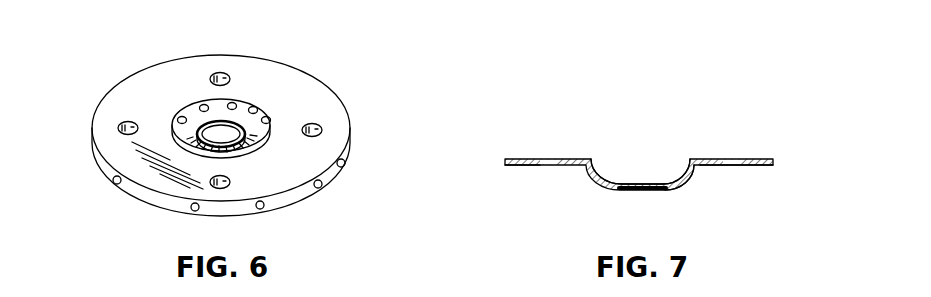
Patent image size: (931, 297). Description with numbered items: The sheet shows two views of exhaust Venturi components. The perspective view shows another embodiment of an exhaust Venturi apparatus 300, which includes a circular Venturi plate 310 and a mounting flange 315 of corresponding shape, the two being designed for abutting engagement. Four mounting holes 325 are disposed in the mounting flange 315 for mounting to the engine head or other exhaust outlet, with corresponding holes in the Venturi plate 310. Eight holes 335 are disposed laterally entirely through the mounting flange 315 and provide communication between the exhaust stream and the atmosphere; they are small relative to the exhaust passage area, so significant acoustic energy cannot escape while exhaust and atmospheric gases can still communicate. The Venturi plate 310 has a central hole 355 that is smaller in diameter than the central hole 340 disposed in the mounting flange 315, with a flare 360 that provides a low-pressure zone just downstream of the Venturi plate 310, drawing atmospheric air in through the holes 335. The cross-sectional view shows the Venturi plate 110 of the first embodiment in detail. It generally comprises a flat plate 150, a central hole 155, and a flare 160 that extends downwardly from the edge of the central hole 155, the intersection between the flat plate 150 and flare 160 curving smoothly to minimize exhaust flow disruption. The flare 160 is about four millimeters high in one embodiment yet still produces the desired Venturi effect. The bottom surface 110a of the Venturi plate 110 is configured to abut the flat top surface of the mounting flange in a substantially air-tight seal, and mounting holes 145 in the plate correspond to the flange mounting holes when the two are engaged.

In FIG. 6, the exhaust Venturi apparatus 300 is at (362, 84).
In FIG. 6, the Venturi plate 310 is at (180, 214).
In FIG. 6, the mounting flange 315 is at (94, 104).
In FIG. 6, the mounting holes 325 is at (230, 182).
In FIG. 6, the holes 335 is at (230, 106).
In FIG. 6, the central hole 340 is at (192, 126).
In FIG. 6, the central hole 355 is at (219, 138).
In FIG. 6, the flare 360 is at (263, 129).
In FIG. 7, the Venturi plate 110 is at (778, 162).
In FIG. 7, the bottom surface 110a is at (519, 166).
In FIG. 7, the mounting holes 145 is at (733, 167).
In FIG. 7, the flat plate 150 is at (690, 158).
In FIG. 7, the central hole 155 is at (638, 168).
In FIG. 7, the flare 160 is at (667, 188).